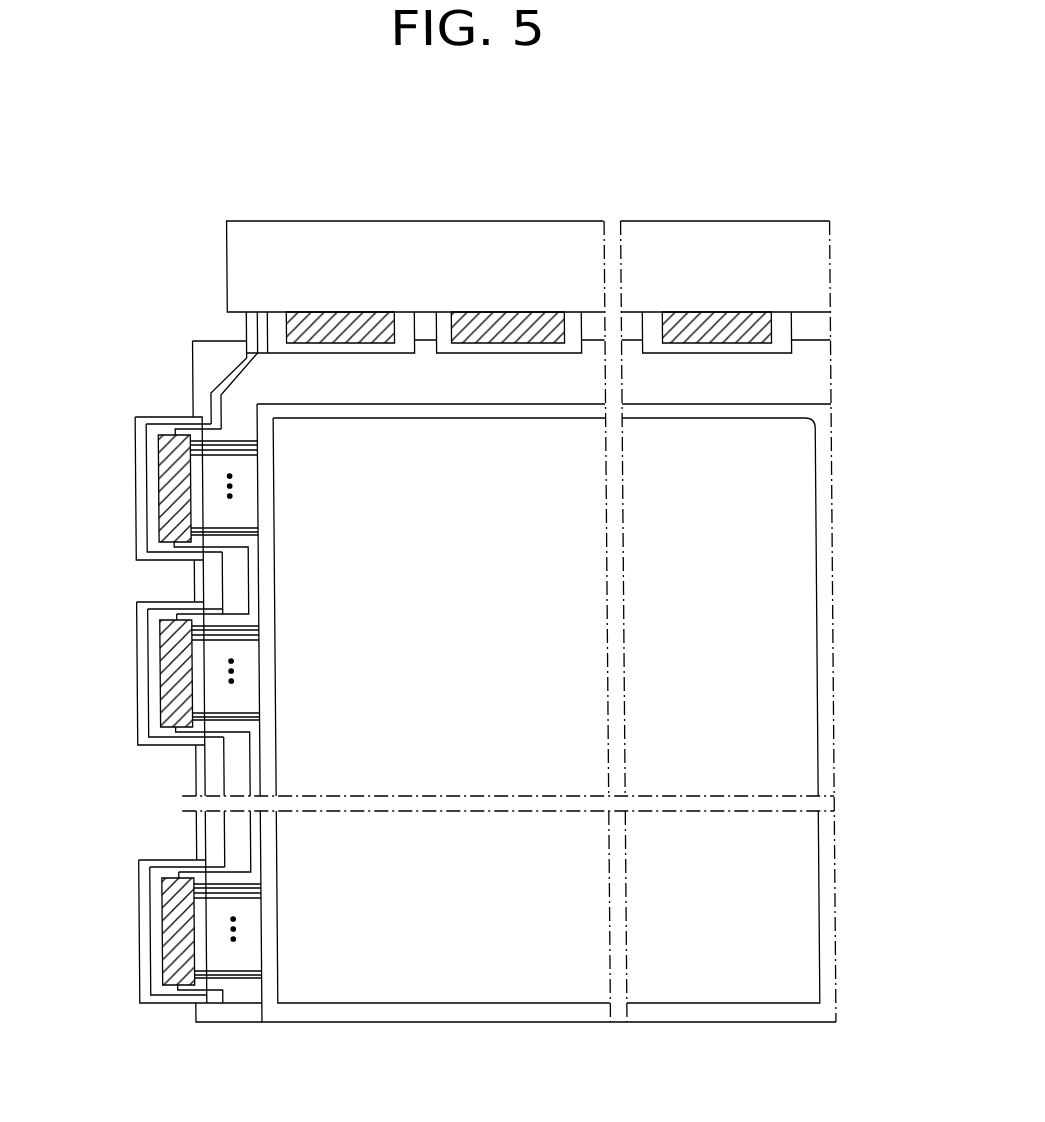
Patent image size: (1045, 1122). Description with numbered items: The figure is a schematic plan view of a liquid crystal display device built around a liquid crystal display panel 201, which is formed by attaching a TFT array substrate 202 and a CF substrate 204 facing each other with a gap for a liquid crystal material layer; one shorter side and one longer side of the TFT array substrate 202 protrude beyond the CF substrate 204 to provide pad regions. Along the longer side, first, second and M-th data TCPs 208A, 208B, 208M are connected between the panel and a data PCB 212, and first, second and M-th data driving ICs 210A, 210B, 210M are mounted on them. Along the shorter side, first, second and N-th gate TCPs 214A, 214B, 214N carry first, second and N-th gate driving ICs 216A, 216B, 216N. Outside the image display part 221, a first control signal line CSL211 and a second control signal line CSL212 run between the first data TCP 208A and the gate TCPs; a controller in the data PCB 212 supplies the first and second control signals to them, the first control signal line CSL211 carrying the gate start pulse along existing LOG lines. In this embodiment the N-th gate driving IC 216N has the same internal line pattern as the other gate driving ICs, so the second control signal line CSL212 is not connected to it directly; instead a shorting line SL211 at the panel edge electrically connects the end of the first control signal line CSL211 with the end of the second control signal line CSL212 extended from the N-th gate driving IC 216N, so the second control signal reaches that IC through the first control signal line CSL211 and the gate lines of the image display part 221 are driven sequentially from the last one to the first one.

The liquid crystal display panel 201 is at (832, 547).
The TFT array substrate 202 is at (818, 367).
The CF substrate 204 is at (820, 457).
The data PCB 212 is at (407, 228).
The first data TCP 208A is at (269, 322).
The first data driving IC 210A is at (334, 320).
The second data TCP 208B is at (569, 322).
The second data driving IC 210B is at (491, 320).
The M-th data TCP 208M is at (651, 322).
The M-th data driving IC 210M is at (758, 320).
The first gate TCP 214A is at (135, 481).
The first gate driving IC 216A is at (158, 452).
The second gate TCP 214B is at (135, 666).
The second gate driving IC 216B is at (158, 637).
The N-th gate TCP 214N is at (134, 923).
The N-th gate driving IC 216N is at (158, 894).
The image display part 221 is at (440, 622).
The second control signal line CSL212 is at (230, 374).
The first control signal line CSL211 is at (223, 390).
The shorting line SL211 is at (216, 1003).